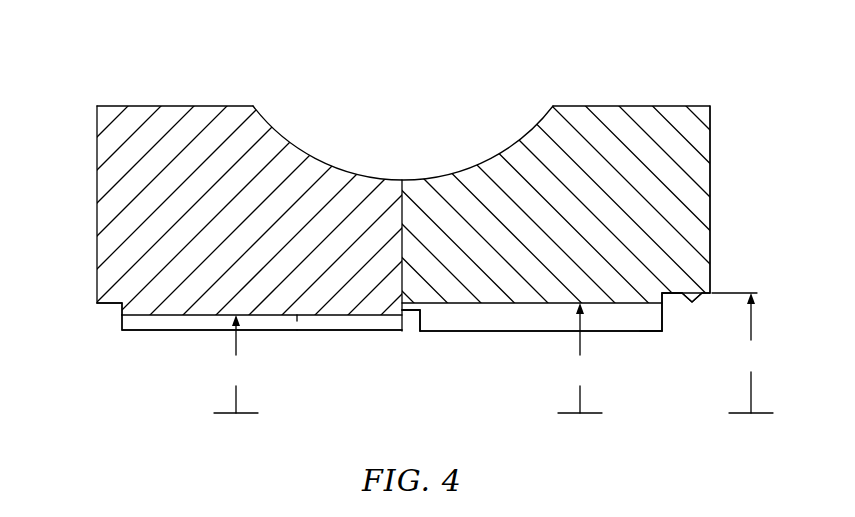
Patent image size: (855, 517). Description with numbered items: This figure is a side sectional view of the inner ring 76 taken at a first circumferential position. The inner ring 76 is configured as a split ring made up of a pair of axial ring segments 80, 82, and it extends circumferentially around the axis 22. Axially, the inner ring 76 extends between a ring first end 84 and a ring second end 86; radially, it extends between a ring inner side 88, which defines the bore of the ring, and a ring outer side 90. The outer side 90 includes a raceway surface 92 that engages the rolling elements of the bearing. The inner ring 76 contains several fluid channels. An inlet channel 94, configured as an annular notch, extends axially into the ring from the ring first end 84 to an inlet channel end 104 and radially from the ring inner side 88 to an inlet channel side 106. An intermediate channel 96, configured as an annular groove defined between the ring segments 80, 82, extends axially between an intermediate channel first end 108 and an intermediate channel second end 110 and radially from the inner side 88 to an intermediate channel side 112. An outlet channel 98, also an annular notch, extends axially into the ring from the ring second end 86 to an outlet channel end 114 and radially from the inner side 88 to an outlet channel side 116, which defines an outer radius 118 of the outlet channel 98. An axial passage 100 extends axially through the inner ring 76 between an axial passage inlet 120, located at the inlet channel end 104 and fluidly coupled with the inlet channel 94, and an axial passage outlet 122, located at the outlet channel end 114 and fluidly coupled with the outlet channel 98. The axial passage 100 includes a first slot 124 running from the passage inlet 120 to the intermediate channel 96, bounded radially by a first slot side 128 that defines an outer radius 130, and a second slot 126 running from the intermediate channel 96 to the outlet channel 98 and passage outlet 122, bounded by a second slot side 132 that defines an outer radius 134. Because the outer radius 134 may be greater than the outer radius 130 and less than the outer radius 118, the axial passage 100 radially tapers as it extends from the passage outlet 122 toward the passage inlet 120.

The inner ring 76 is at (96, 74).
The axial ring segment 80 is at (207, 100).
The axial ring segment 82 is at (608, 98).
The ring first end 84 is at (97, 187).
The ring second end 86 is at (710, 190).
The ring inner side 88 is at (162, 333).
The ring outer side 90 is at (145, 104).
The raceway surface 92 is at (314, 157).
The inlet channel 94 is at (97, 331).
The intermediate channel 96 is at (397, 304).
The outlet channel 98 is at (697, 334).
The axial passage 100 is at (505, 333).
The inlet channel end 104 is at (110, 317).
The inlet channel side 106 is at (103, 305).
The intermediate channel first end 108 is at (406, 331).
The intermediate channel second end 110 is at (413, 327).
The intermediate channel side 112 is at (418, 320).
The outlet channel end 114 is at (672, 305).
The outlet channel side 116 is at (697, 293).
The outer radius of the outlet channel 118 is at (740, 353).
The axial passage inlet 120 is at (121, 330).
The axial passage outlet 122 is at (670, 328).
The first slot 124 is at (194, 323).
The second slot 126 is at (533, 323).
The first slot side 128 is at (299, 320).
The outer radius of the first slot 130 is at (238, 364).
The second slot side 132 is at (626, 305).
The outer radius of the second slot 134 is at (580, 358).
The axis 22 is at (223, 413).